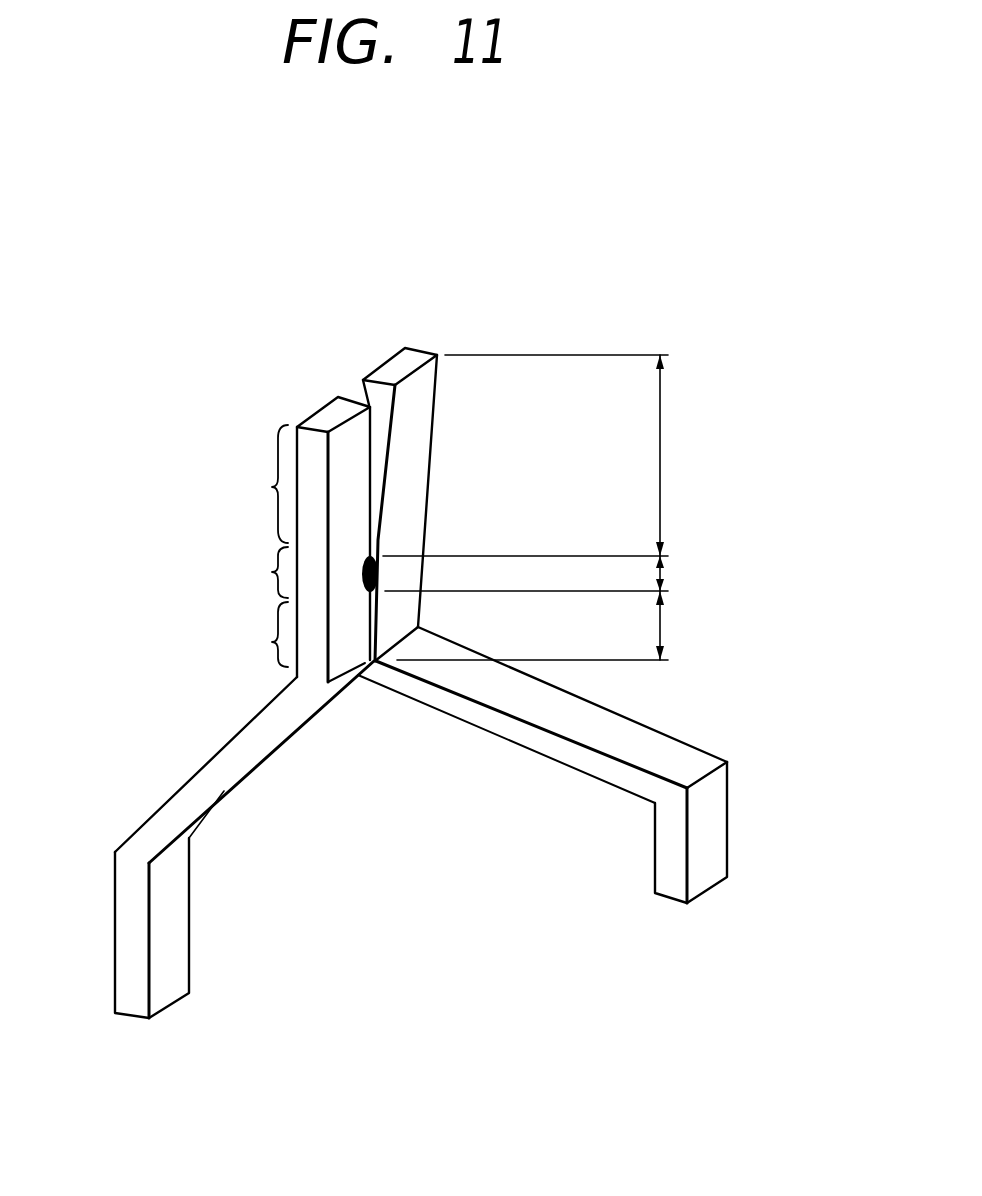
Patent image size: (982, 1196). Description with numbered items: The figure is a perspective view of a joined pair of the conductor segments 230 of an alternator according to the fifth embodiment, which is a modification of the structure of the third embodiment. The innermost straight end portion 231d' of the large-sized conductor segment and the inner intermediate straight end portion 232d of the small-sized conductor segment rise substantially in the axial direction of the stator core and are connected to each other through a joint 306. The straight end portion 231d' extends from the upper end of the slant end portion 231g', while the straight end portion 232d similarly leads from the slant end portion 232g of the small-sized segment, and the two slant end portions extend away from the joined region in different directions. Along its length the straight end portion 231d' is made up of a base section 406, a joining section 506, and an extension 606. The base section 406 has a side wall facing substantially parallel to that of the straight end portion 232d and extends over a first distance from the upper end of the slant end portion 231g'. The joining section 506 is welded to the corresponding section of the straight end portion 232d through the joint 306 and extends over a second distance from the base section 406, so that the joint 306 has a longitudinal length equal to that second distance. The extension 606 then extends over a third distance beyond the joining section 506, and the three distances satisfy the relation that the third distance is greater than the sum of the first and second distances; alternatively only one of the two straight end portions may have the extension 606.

The conductor segments 230 is at (442, 627).
The innermost straight end portion 231d' is at (277, 507).
The inner intermediate straight end portion 232d is at (395, 367).
The slant end portion 231g' is at (199, 839).
The slant end portion 232g is at (655, 745).
The joint 306 is at (378, 575).
The extension 606 is at (250, 484).
The joining section 506 is at (250, 572).
The base section 406 is at (250, 634).